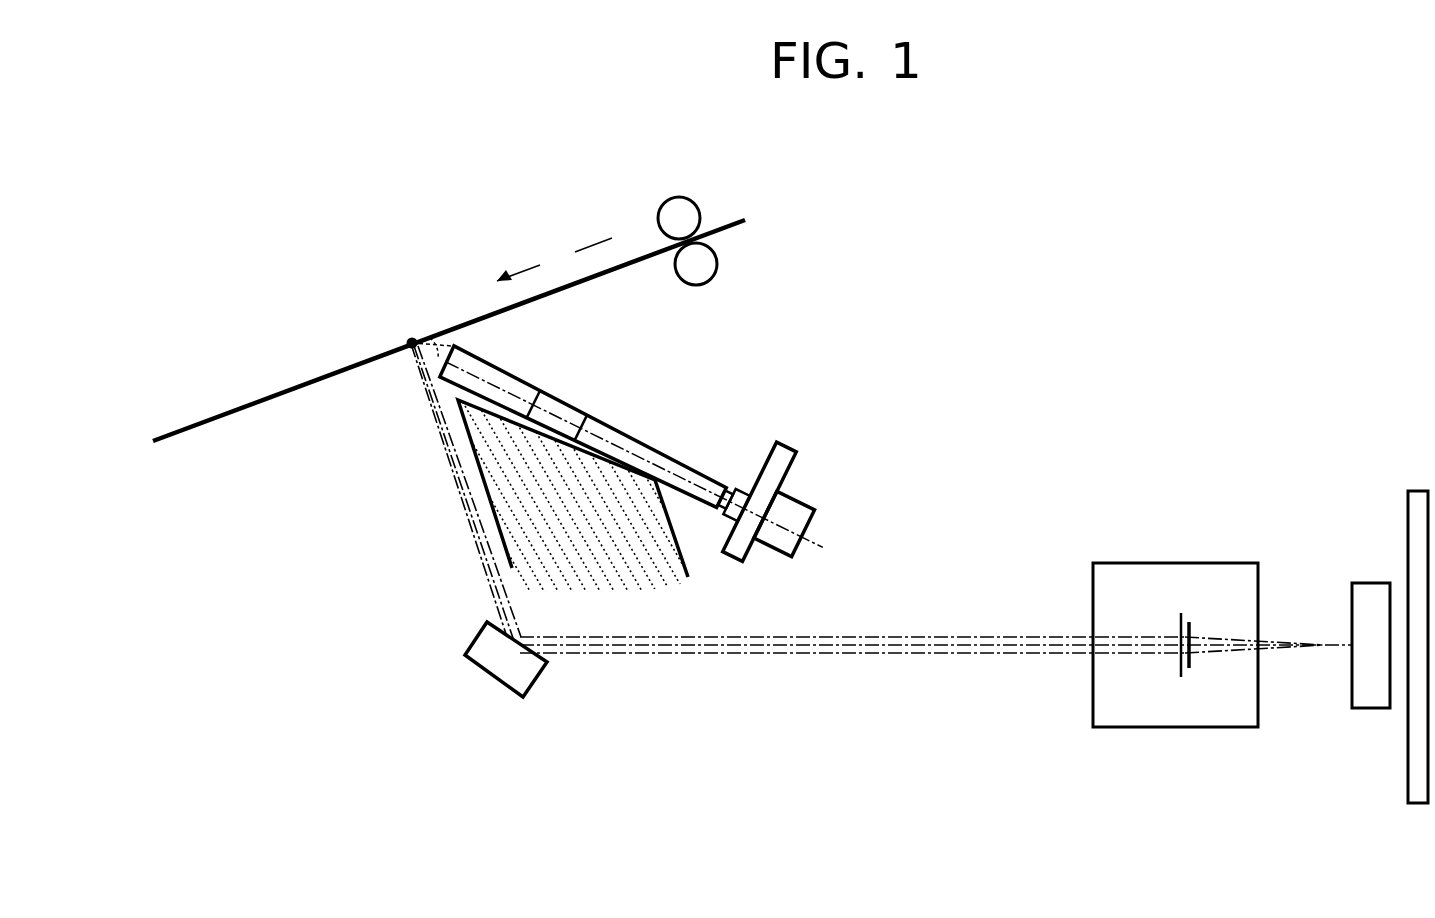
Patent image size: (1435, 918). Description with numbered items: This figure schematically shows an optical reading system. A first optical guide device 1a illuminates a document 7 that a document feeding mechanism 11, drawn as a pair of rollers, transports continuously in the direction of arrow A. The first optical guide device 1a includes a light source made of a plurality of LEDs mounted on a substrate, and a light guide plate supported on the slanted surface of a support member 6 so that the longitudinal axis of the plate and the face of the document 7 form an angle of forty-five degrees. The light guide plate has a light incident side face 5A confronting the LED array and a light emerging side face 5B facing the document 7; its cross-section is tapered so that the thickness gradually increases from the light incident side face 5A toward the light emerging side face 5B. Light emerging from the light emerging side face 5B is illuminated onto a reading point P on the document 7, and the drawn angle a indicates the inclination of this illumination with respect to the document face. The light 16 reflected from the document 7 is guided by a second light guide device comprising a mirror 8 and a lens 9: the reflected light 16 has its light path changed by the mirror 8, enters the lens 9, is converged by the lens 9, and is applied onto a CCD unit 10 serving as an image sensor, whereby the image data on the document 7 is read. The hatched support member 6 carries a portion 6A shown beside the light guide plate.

The first optical guide device 1a is at (1017, 388).
The light incident side face 5A is at (729, 488).
The light emerging side face 5B is at (458, 362).
The support member 6 is at (655, 540).
The holder body 6A is at (578, 453).
The document 7 is at (253, 398).
The mirror 8 is at (532, 668).
The lens 9 is at (1085, 582).
The CCD unit 10 is at (1405, 524).
The document feeding mechanism 11 is at (718, 268).
The reflected light beam 16 is at (438, 570).
The reading point P is at (412, 341).
The arrow A is at (554, 259).
The incident angle a is at (440, 346).